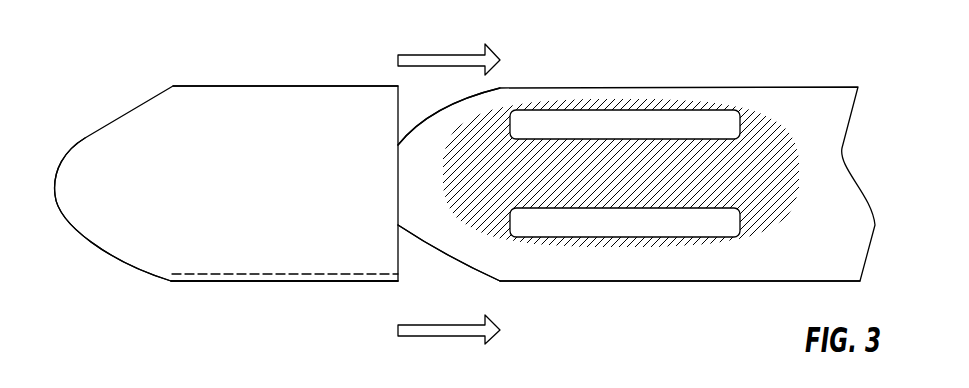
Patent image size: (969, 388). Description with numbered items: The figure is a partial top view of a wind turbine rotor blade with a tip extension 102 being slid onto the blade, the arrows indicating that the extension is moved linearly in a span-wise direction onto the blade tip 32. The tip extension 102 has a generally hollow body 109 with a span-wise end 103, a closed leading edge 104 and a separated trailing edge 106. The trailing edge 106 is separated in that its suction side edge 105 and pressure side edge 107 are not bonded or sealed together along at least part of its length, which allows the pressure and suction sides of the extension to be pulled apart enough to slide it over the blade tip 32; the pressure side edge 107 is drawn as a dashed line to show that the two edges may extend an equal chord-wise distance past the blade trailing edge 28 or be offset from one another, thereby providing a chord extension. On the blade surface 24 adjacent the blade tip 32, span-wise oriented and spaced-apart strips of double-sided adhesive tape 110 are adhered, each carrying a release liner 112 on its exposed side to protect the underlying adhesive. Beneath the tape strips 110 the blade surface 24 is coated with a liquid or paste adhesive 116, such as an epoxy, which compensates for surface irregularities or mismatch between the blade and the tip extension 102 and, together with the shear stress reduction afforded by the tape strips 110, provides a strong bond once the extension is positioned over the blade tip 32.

The blade surface 24 is at (797, 98).
The trailing edge of the wind turbine blade 28 is at (625, 283).
The blade tip 32 is at (469, 264).
The tip extension 102 is at (318, 86).
The span-wise end 103 is at (398, 101).
The closed leading edge 104 is at (237, 86).
The suction side edge 105 is at (220, 282).
The separated trailing edge 106 is at (268, 283).
The pressure side edge 107 is at (325, 272).
The hollow body 109 is at (180, 243).
The double-sided adhesive tape strips 110 is at (608, 140).
The release liner 112 is at (740, 127).
The adhesive 116 is at (544, 194).